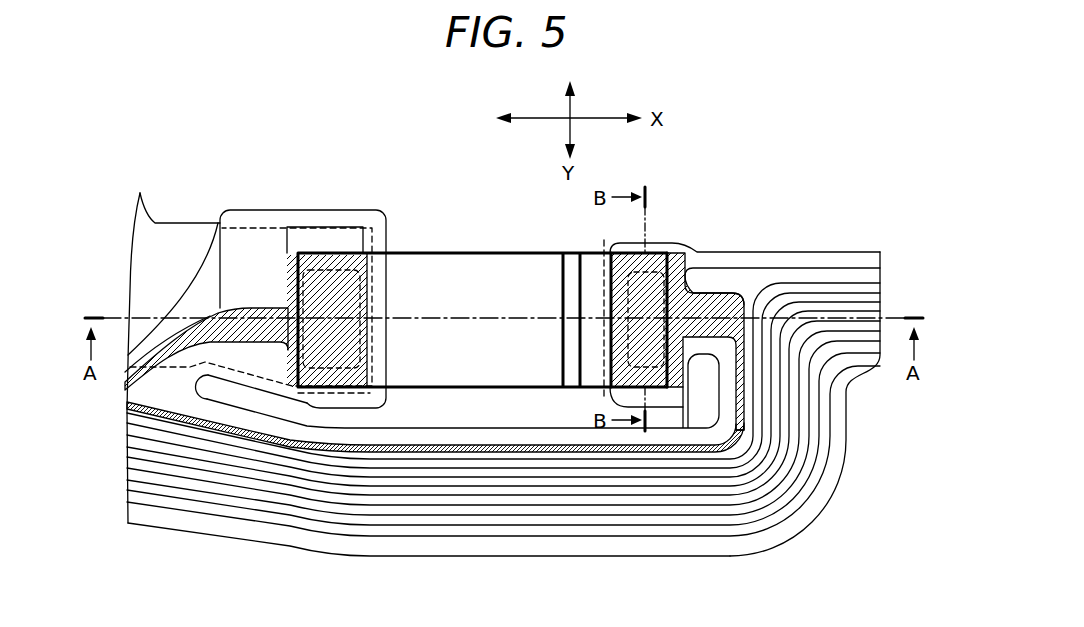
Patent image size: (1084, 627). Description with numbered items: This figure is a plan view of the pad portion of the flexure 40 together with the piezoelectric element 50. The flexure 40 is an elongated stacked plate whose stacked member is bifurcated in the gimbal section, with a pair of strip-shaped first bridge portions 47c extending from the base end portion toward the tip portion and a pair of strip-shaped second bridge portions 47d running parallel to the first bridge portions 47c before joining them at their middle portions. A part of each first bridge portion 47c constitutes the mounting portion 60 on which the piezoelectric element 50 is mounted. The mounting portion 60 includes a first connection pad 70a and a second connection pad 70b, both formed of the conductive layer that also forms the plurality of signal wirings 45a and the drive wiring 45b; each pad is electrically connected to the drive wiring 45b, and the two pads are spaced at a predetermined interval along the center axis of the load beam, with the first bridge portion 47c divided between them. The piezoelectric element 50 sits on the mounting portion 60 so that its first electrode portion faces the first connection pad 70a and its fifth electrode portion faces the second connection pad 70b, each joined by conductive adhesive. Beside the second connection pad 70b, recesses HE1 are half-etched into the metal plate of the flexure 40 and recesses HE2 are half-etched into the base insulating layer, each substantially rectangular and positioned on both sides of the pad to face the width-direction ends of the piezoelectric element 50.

The flexure 40 is at (785, 235).
The signal wirings 45a is at (450, 508).
The drive wiring 45b is at (125, 395).
The first bridge portions 47c is at (152, 258).
The second bridge portions 47d is at (586, 548).
The piezoelectric element 50 is at (485, 278).
The mounting portion 60 is at (408, 222).
The first connection pad 70a is at (328, 290).
The second connection pad 70b is at (650, 287).
The recesses HE1 is at (310, 242).
The recesses HE2 is at (648, 273).